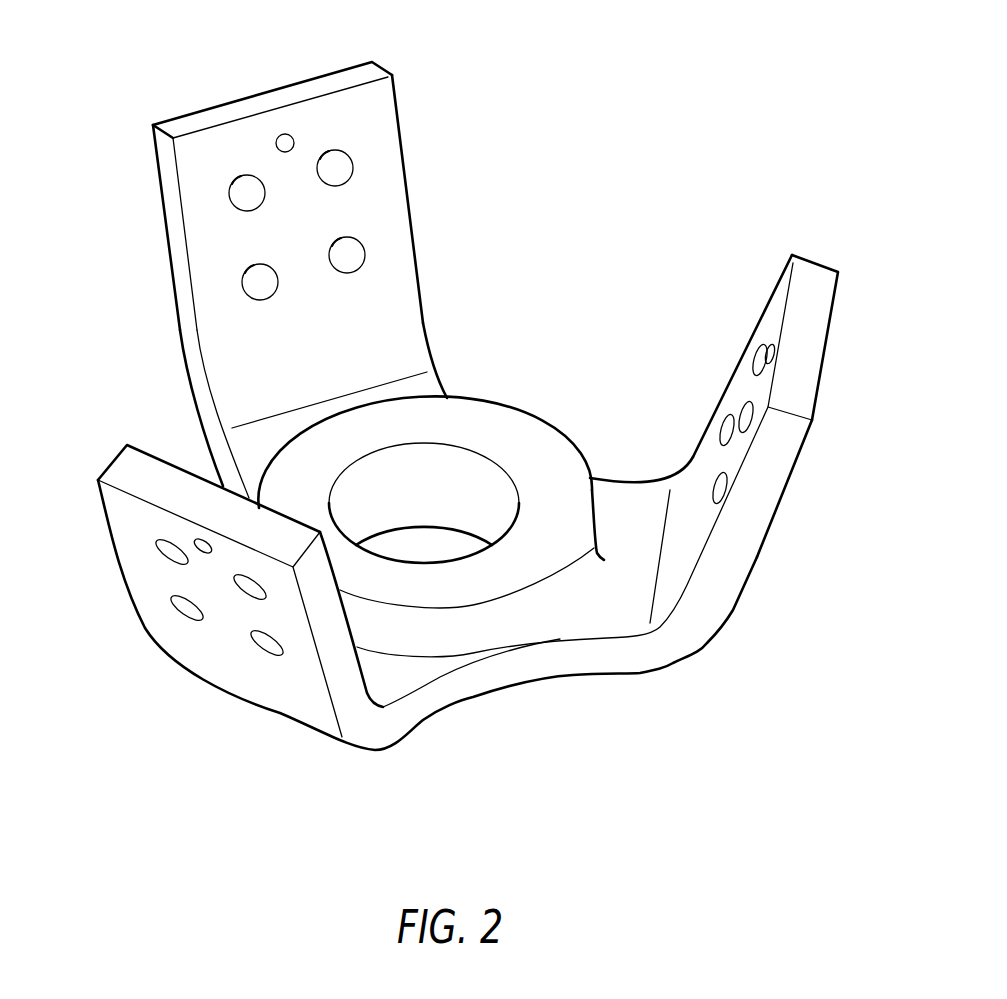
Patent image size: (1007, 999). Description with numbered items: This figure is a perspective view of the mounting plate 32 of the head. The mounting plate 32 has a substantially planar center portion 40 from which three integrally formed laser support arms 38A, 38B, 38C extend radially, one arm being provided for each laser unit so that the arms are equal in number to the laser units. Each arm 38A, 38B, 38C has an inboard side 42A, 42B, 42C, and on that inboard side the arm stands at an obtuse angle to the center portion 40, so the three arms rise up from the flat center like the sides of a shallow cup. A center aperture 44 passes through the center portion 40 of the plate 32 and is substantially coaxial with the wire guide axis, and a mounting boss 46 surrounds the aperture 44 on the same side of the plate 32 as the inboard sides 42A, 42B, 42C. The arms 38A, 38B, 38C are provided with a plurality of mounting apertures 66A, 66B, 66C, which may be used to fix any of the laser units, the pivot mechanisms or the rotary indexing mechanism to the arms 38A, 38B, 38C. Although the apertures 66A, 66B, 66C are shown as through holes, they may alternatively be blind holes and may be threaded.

The mounting plate 32 is at (408, 159).
The laser support arm 38A is at (786, 486).
The laser support arm 38B is at (413, 235).
The laser support arm 38C is at (117, 541).
The center portion 40 is at (620, 481).
The inboard side 42A is at (776, 296).
The inboard side 42B is at (211, 175).
The inboard side 42C is at (143, 450).
The center aperture 44 is at (408, 560).
The mounting boss 46 is at (503, 405).
The mounting apertures 66A is at (716, 482).
The mounting apertures 66B is at (262, 264).
The mounting apertures 66C is at (258, 650).